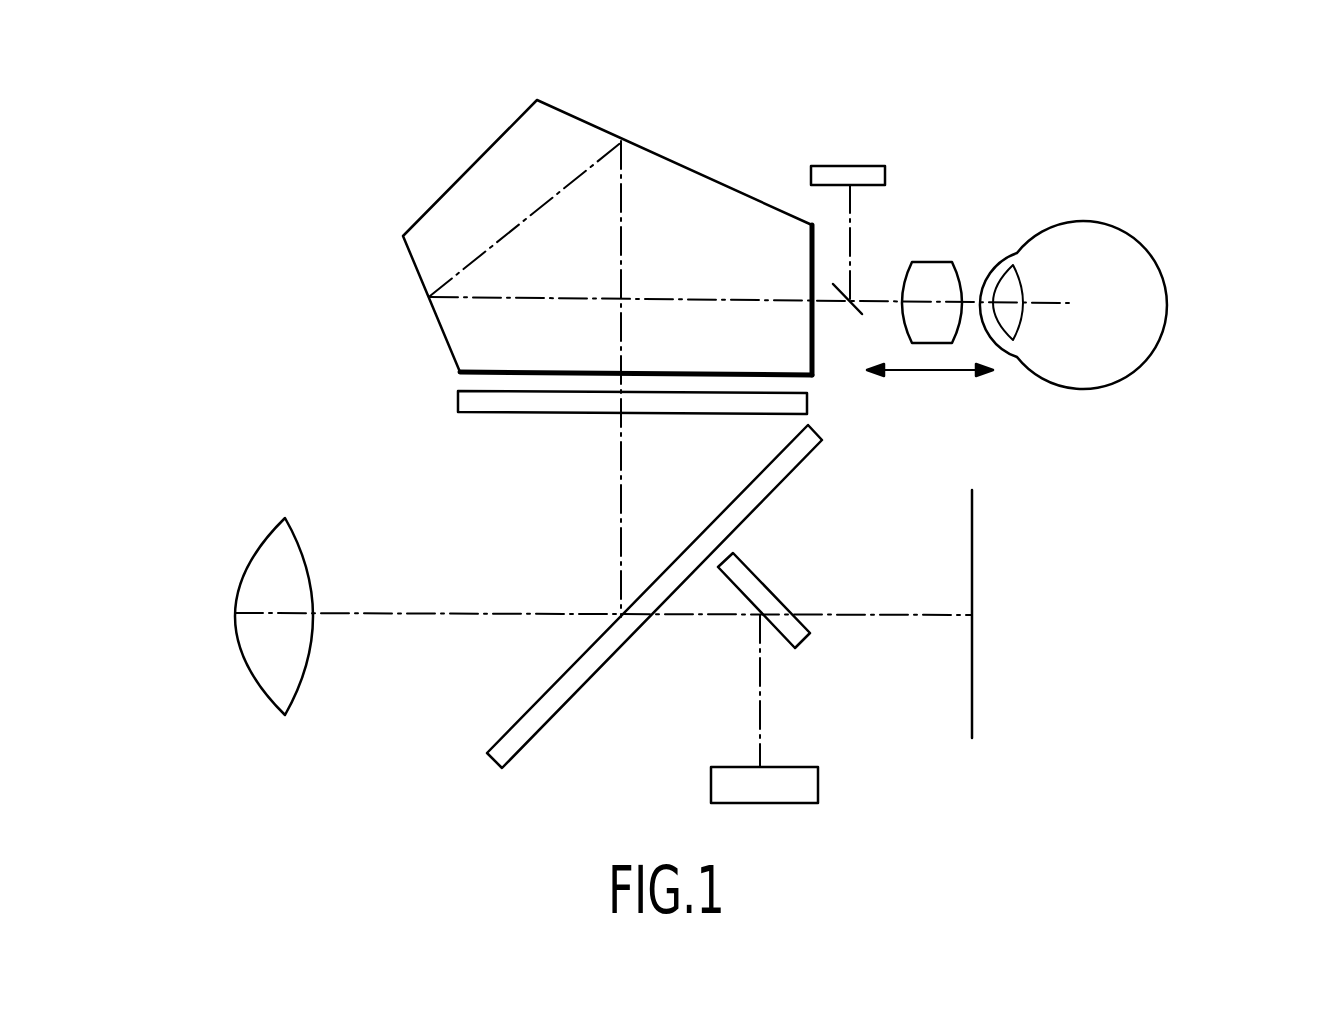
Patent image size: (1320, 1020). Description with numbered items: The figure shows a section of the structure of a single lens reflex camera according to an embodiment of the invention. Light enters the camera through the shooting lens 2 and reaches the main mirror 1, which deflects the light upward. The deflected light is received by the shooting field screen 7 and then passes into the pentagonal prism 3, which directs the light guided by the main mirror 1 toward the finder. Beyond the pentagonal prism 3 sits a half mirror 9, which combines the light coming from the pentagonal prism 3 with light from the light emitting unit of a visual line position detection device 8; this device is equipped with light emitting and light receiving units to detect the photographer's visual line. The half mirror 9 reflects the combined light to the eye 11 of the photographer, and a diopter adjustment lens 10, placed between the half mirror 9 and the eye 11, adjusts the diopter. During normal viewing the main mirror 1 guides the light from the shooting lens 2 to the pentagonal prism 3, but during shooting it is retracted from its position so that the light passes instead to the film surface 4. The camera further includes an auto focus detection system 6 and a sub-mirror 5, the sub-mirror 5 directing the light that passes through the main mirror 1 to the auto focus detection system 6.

The main mirror 1 is at (650, 617).
The shooting lens 2 is at (290, 698).
The pentagonal prism 3 is at (468, 168).
The film surface 4 is at (972, 602).
The sub-mirror 5 is at (767, 585).
The auto focus detection system 6 is at (822, 776).
The shooting field screen 7 is at (508, 413).
The visual line position detection device 8 is at (843, 165).
The half mirror 9 is at (850, 303).
The diopter adjustment lens 10 is at (930, 262).
The eye 11 is at (1167, 298).